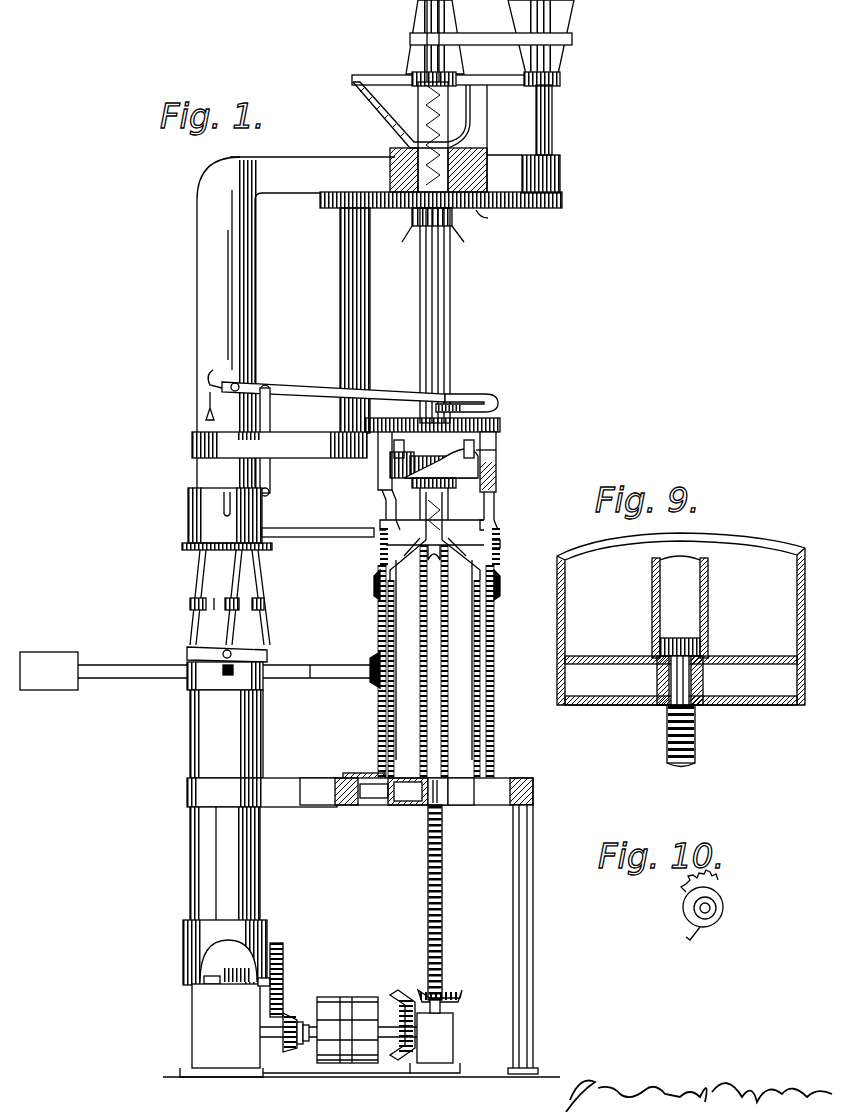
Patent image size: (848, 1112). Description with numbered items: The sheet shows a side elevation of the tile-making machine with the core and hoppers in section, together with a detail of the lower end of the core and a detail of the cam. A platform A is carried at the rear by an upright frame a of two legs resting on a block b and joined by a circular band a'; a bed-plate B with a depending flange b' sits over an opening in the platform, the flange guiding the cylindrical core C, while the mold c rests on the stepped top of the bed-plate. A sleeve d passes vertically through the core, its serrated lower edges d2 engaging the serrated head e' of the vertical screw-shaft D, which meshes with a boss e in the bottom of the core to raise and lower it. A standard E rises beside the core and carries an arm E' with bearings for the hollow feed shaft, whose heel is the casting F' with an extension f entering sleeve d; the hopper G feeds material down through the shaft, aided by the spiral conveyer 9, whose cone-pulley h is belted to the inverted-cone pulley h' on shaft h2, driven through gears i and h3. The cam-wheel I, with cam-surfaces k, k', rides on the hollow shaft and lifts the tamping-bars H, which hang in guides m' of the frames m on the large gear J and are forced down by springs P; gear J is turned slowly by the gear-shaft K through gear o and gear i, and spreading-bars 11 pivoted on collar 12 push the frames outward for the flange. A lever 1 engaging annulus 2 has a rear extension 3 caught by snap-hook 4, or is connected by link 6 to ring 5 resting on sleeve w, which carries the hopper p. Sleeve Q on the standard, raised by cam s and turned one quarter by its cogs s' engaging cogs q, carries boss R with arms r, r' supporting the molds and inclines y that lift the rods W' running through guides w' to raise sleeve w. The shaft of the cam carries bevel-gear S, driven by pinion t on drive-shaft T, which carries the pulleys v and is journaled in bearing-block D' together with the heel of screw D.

In FIG. 1, the cone-pulley h is at (435, 37).
In FIG. 1, the inverted-cone pulley h' is at (545, 37).
In FIG. 1, the shaft of cone-pulley h2 is at (552, 132).
In FIG. 1, the gear on cone-shaft h3 is at (541, 193).
In FIG. 1, the hopper G is at (388, 132).
In FIG. 1, the screw shaft 9 is at (430, 138).
In FIG. 1, the arm E' is at (312, 145).
In FIG. 1, the gear o is at (441, 210).
In FIG. 1, the collar 12 is at (412, 218).
In FIG. 1, the spreading-bars 11 is at (438, 241).
In FIG. 1, the gear i is at (482, 220).
In FIG. 1, the standard E is at (258, 298).
In FIG. 1, the gear-shaft K is at (348, 326).
In FIG. 1, the casting F' is at (450, 315).
In FIG. 1, the lever 1 is at (308, 392).
In FIG. 1, the annulus 2 is at (472, 376).
In FIG. 1, the rear extension 3 is at (213, 368).
In FIG. 1, the snap-hook 4 is at (205, 395).
In FIG. 1, the large gear J is at (500, 420).
In FIG. 1, the link 6 is at (272, 422).
In FIG. 1, the cam-wheel I is at (279, 457).
In FIG. 1, the hanging frames m is at (374, 476).
In FIG. 1, the cam-surfaces k is at (402, 459).
In FIG. 1, the block k' is at (441, 459).
In FIG. 1, the contraction-spring P is at (496, 462).
In FIG. 1, the guides m' is at (502, 472).
In FIG. 1, the ring 5 is at (225, 515).
In FIG. 1, the short sleeve w is at (227, 536).
In FIG. 1, the tamping-bars H is at (380, 516).
In FIG. 1, the hopper p is at (500, 544).
In FIG. 1, the extension f is at (435, 559).
In FIG. 1, the sleeve d is at (430, 580).
In FIG. 9, the sleeve d is at (698, 607).
In FIG. 1, the cables W' is at (223, 597).
In FIG. 1, the pin w' is at (214, 597).
In FIG. 1, the inclined planes y is at (187, 650).
In FIG. 1, the rod r' is at (200, 676).
In FIG. 1, the arms r is at (225, 676).
In FIG. 1, the collar or boss R is at (263, 690).
In FIG. 1, the mold c is at (378, 724).
In FIG. 9, the mold c is at (565, 598).
In FIG. 1, the bed-plate B is at (330, 776).
In FIG. 1, the circular band a' is at (262, 792).
In FIG. 1, the platform A is at (416, 804).
In FIG. 1, the flange b' is at (374, 805).
In FIG. 1, the boss e is at (431, 791).
In FIG. 9, the boss e is at (681, 680).
In FIG. 1, the core C is at (497, 939).
In FIG. 1, the upright frame a is at (225, 896).
In FIG. 1, the sleeve Q is at (268, 905).
In FIG. 1, the cogs q is at (224, 983).
In FIG. 1, the block b is at (221, 1030).
In FIG. 1, the cam s is at (255, 989).
In FIG. 10, the cam s is at (692, 932).
In FIG. 1, the bevel-gear S is at (283, 970).
In FIG. 1, the drive-shaft T is at (268, 1032).
In FIG. 1, the beveled pinion t is at (293, 1012).
In FIG. 1, the motor v is at (347, 1030).
In FIG. 1, the bearing-block D' is at (426, 1031).
In FIG. 1, the screw-shaft D is at (448, 909).
In FIG. 9, the screw-shaft D is at (696, 736).
In FIG. 9, the head e' is at (680, 635).
In FIG. 9, the lower end edges of sleeve d2 is at (708, 650).
In FIG. 10, the cogs s' is at (686, 898).